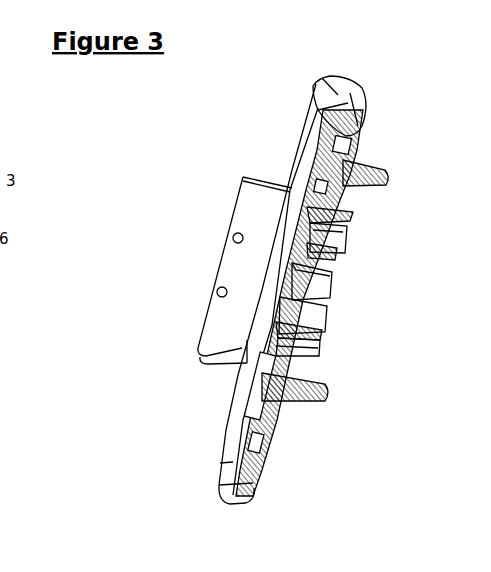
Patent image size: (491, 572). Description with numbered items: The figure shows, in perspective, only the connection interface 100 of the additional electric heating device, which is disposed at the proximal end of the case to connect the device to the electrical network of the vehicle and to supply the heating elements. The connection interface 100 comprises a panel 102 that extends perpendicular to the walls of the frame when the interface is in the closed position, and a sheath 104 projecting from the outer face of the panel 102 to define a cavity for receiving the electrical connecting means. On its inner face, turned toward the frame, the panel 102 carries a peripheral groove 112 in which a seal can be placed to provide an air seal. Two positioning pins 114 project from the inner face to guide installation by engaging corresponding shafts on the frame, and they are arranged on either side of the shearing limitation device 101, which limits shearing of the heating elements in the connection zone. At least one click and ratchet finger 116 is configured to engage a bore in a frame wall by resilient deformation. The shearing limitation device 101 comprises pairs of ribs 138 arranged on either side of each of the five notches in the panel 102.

The connection interface 100 is at (145, 412).
The shearing limitation device 101 is at (326, 294).
The panel 102 is at (300, 167).
The sheath 104 is at (252, 192).
The peripheral groove 112 is at (352, 125).
The positioning pin 114 is at (375, 167).
The click and ratchet finger 116 is at (290, 337).
The pair of ribs 138 is at (322, 272).